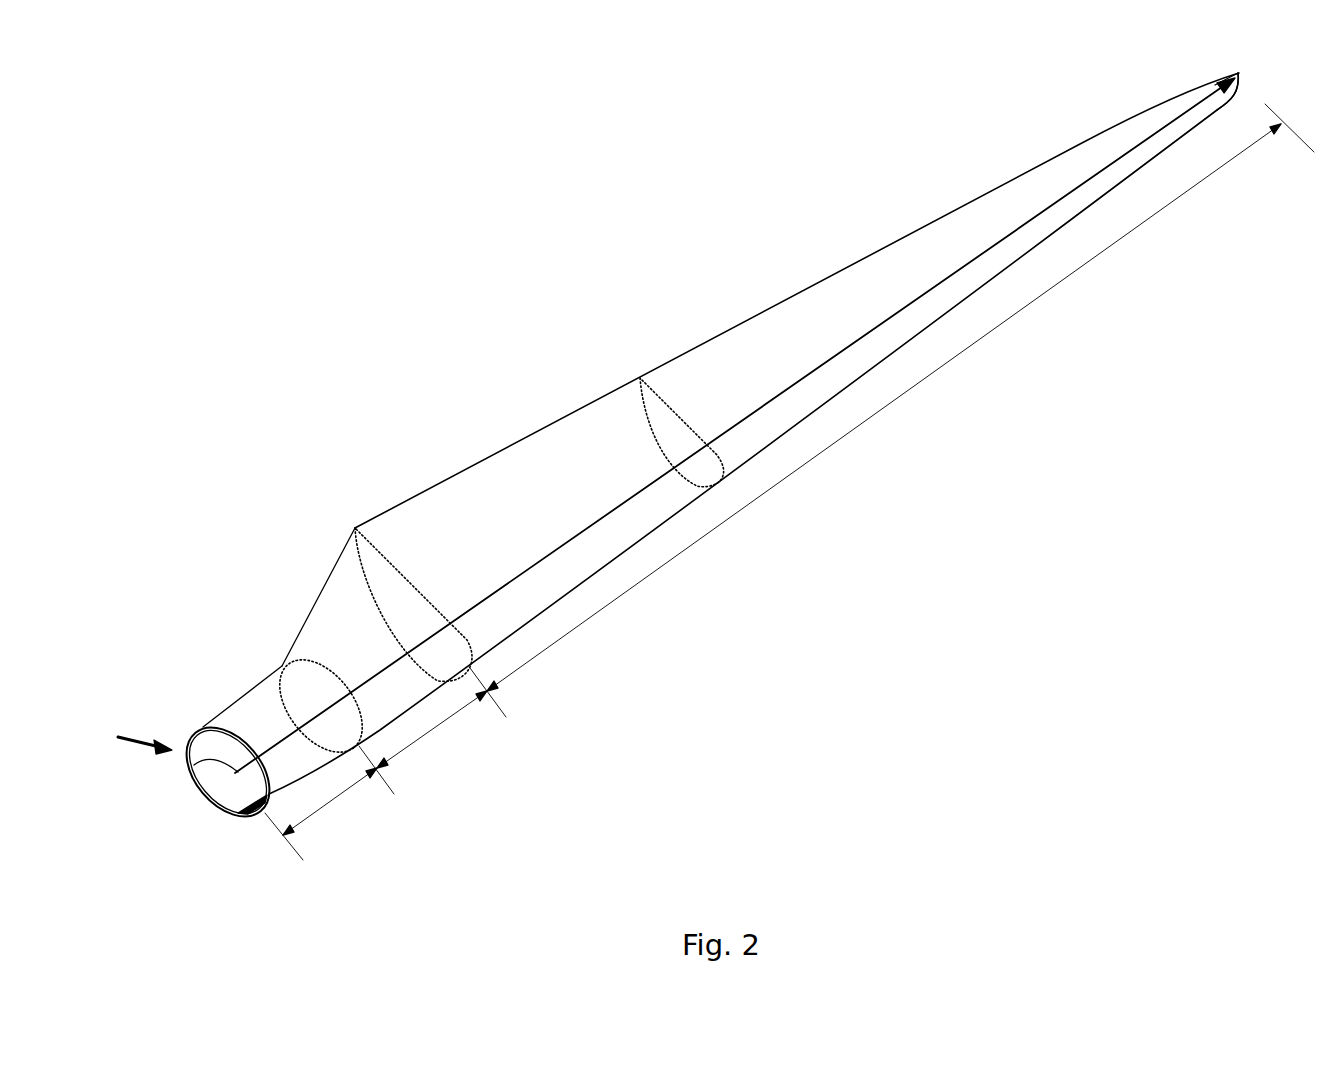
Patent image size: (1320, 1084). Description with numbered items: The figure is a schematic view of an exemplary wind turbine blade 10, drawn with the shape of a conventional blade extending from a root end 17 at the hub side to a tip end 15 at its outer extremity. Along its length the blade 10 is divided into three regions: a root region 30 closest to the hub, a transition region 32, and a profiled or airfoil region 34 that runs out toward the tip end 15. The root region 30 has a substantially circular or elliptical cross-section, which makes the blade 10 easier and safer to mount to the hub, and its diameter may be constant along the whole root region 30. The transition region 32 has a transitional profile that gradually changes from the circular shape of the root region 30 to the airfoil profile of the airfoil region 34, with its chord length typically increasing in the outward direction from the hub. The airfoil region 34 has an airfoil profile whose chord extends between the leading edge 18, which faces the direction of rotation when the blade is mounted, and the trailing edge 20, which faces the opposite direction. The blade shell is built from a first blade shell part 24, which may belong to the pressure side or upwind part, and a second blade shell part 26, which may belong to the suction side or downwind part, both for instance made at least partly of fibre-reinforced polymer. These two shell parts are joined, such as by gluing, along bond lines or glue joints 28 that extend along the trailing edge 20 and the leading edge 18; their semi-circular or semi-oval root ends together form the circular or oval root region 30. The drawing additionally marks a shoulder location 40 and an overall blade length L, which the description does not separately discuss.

The wind turbine blade 10 is at (698, 483).
The tip end 15 is at (1238, 73).
The root end 17 is at (127, 737).
The leading edge 18 is at (922, 332).
The trailing edge 20 is at (807, 290).
The first blade shell part 24 is at (230, 725).
The second blade shell part 26 is at (215, 805).
The glue joints 28 is at (198, 736).
The root region 30 is at (330, 803).
The transition region 32 is at (435, 732).
The airfoil region 34 is at (805, 463).
The shoulder / transition region with airfoil cross-sections 40 is at (355, 528).
The blade length L is at (195, 765).